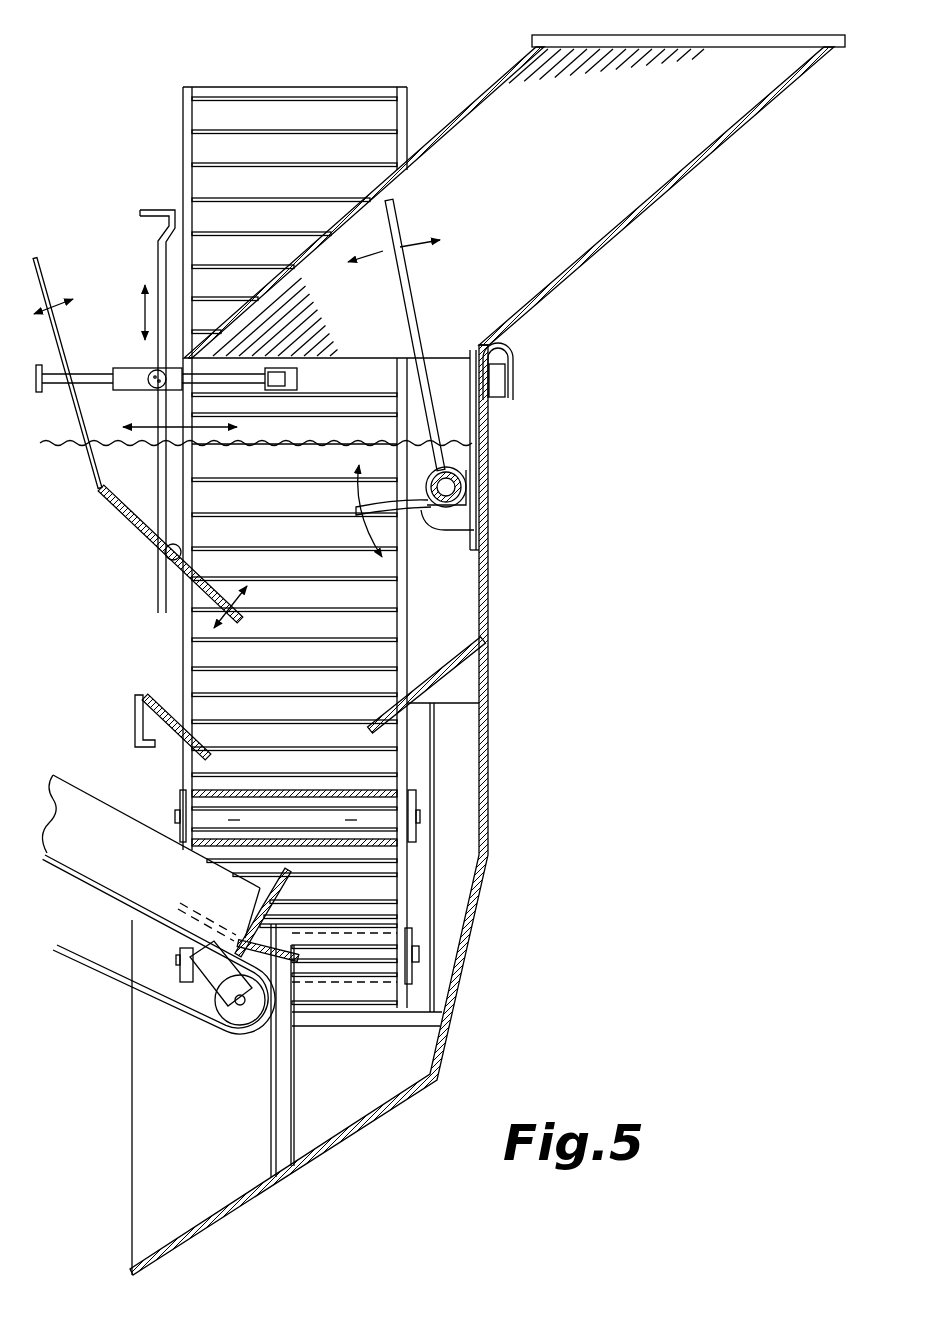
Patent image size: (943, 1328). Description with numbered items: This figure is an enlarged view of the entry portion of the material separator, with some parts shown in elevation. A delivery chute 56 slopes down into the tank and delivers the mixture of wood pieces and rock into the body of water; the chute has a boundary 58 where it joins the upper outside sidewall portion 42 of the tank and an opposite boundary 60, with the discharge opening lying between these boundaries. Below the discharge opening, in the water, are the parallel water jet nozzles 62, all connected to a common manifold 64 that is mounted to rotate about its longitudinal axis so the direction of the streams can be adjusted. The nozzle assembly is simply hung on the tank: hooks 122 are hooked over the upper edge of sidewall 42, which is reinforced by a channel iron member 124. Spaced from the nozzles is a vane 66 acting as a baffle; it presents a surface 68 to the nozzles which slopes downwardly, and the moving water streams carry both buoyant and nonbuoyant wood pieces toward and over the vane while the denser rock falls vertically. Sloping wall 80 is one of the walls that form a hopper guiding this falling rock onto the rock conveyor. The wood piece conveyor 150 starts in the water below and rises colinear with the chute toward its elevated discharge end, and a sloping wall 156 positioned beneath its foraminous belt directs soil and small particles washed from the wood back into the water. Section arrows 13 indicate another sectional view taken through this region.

The section line 13- 13 is at (113, 797).
The upper outside sidewall portion 42 is at (488, 421).
The delivery chute 56 is at (514, 196).
The boundary 58 is at (657, 207).
The opposite boundary 60 is at (483, 103).
The water jet nozzles 62 is at (452, 528).
The common manifold 64 is at (468, 497).
The vane 66 is at (197, 588).
The surface 68 is at (217, 583).
The wall 80 is at (428, 675).
The hooks 122 is at (539, 369).
The channel iron member 124 is at (497, 381).
The wood piece conveyor 150 is at (204, 1028).
The sloping wall 156 is at (98, 897).